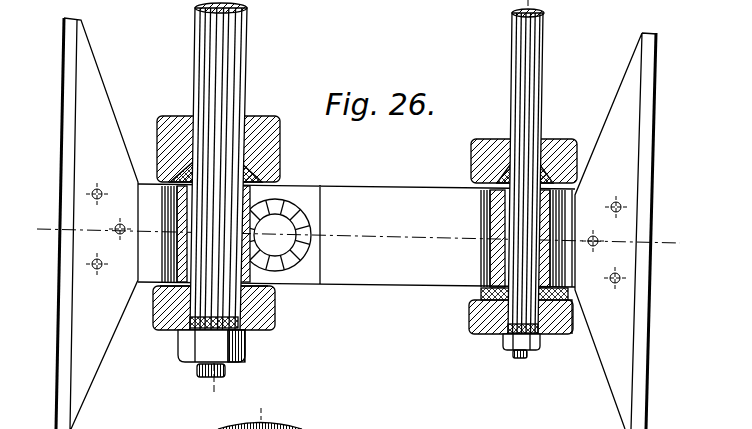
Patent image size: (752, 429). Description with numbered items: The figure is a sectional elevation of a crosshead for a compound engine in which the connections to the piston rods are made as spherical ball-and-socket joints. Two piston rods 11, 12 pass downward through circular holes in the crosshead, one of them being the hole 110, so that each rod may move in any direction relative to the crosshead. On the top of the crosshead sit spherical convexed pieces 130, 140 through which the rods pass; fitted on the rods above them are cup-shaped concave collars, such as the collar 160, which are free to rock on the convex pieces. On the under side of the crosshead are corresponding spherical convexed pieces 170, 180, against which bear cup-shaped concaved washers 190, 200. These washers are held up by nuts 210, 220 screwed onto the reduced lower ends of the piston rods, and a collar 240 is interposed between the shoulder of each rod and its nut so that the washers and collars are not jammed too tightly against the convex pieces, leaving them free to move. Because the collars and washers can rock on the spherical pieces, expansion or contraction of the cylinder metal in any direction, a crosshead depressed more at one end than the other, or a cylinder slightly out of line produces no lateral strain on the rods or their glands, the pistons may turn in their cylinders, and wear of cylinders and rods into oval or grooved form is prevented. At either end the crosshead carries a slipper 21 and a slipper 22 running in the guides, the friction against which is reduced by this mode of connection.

The piston rod 11 is at (535, 60).
The piston rod 12 is at (198, 51).
The slipper 21 is at (63, 300).
The right bracket plate 22 is at (648, 335).
The hole 110 is at (484, 230).
The convexed piece 130 is at (264, 171).
The convexed piece 140 is at (487, 189).
The concave collar 160 is at (482, 140).
The convexed piece 170 is at (262, 307).
The convexed piece 180 is at (470, 304).
The concaved washer 190 is at (153, 298).
The concaved washer 200 is at (575, 315).
The nut 210 is at (220, 350).
The nut 220 is at (518, 338).
The collar 240 is at (248, 333).